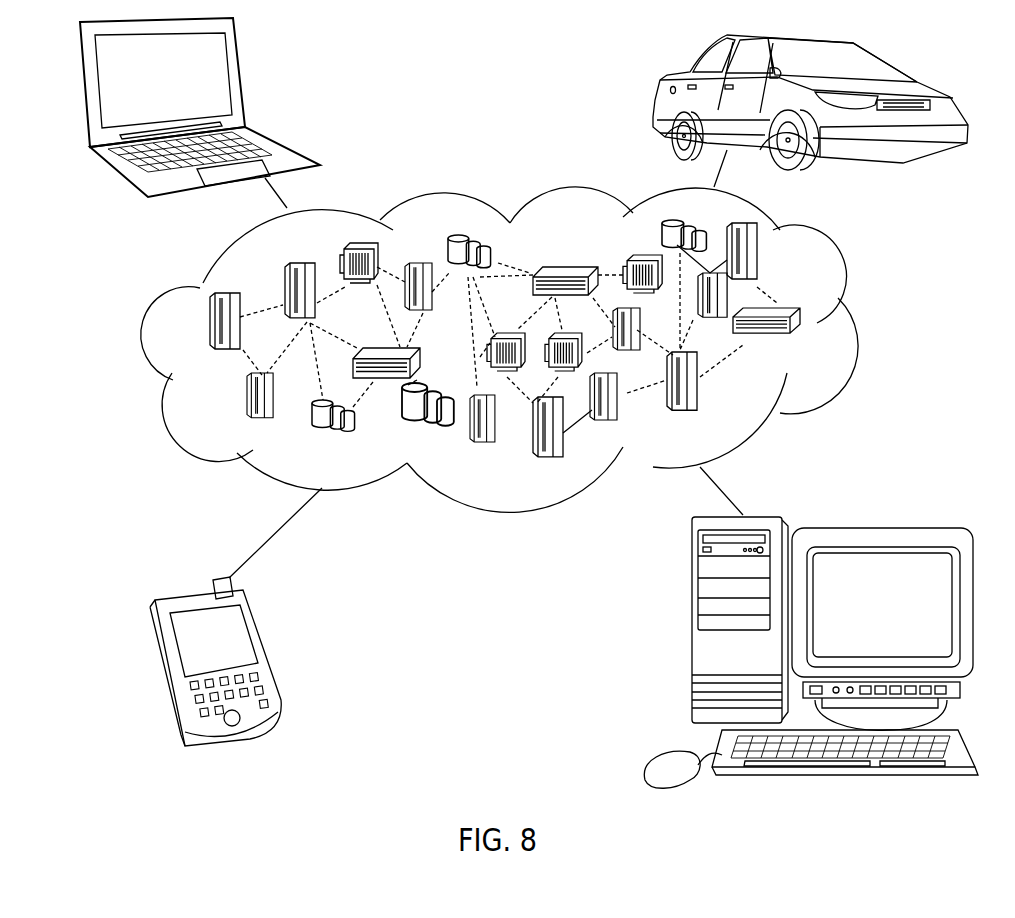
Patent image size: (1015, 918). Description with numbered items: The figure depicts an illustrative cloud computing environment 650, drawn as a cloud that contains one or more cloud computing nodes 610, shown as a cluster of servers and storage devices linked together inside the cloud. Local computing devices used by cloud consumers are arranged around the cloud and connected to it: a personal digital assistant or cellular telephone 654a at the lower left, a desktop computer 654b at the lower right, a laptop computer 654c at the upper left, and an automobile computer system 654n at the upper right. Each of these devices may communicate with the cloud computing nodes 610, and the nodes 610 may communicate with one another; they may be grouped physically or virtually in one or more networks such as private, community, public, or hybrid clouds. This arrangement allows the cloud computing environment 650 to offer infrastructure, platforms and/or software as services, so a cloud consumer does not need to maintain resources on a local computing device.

The cloud computing environment 650 is at (845, 267).
The cloud computing nodes 610 is at (817, 343).
The laptop computer 654c is at (240, 70).
The automobile computer system 654n is at (667, 80).
The personal digital assistant (PDA) or cellular telephone 654a is at (265, 638).
The desktop computer 654b is at (692, 633).